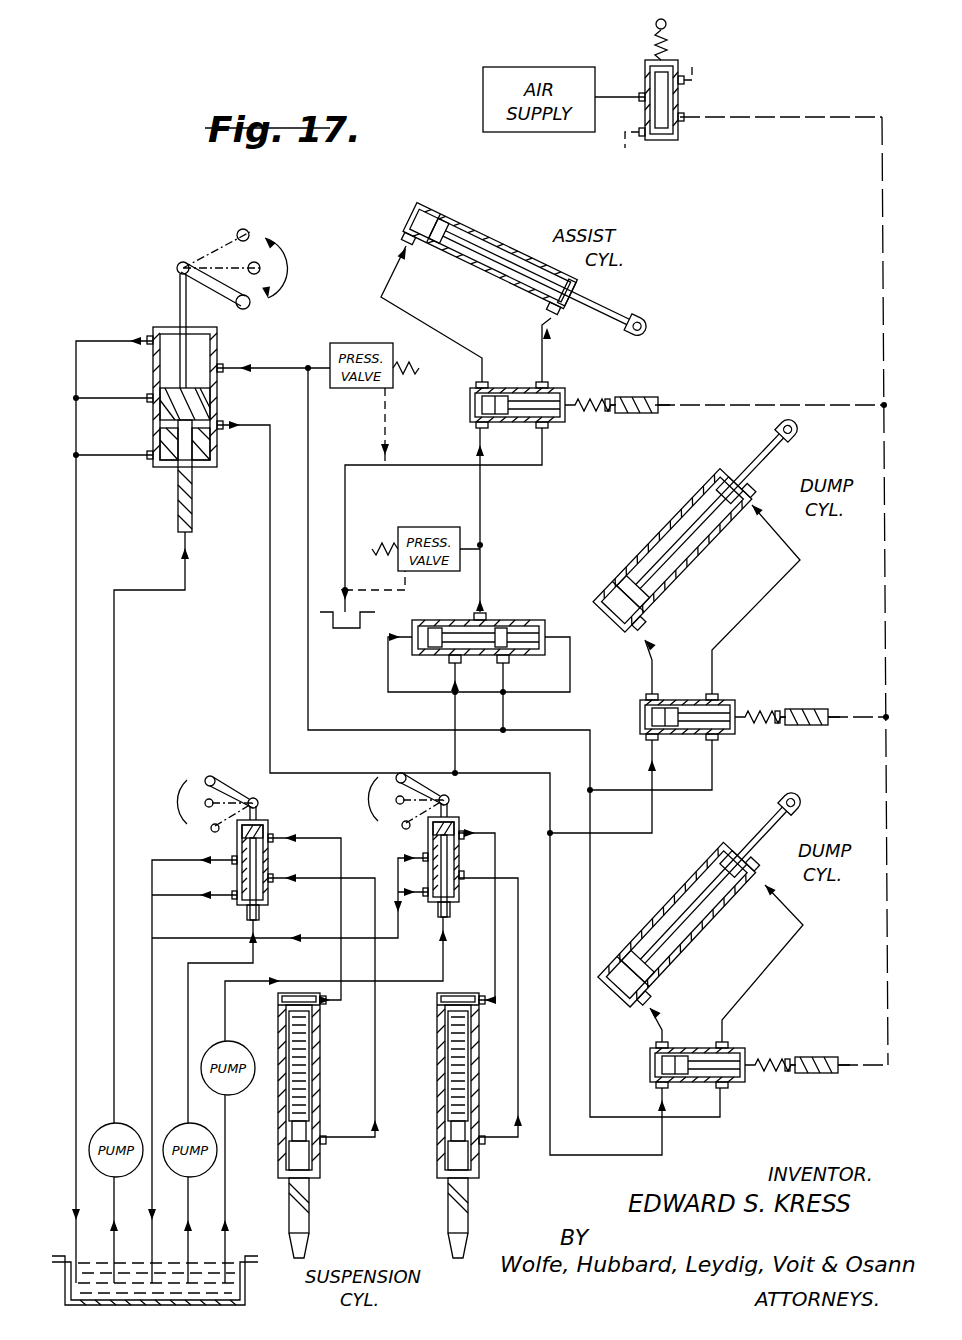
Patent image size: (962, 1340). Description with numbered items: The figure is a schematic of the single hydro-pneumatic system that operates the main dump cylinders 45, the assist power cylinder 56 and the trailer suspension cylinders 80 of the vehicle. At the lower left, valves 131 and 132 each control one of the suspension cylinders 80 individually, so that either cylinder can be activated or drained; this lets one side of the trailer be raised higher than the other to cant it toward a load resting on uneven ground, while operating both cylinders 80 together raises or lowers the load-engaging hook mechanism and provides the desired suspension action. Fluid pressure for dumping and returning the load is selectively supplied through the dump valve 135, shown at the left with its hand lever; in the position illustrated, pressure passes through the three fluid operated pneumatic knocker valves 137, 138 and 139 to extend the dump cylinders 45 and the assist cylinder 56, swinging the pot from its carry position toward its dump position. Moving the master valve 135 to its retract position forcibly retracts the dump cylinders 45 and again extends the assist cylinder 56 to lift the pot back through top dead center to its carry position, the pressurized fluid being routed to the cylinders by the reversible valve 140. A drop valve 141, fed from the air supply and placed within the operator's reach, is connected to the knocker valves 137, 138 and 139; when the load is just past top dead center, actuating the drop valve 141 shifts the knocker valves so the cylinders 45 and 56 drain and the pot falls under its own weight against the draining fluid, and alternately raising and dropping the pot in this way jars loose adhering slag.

The main dump cylinder 45 is at (680, 522).
The assist power cylinder 56 is at (493, 234).
The trailer suspension cylinder 80 is at (320, 1082).
The valve 131 is at (270, 828).
The valve 132 is at (460, 825).
The dump valve 135 is at (153, 328).
The fluid operated pneumatic knocker valve 137 is at (560, 390).
The fluid operated pneumatic knocker valve 138 is at (732, 698).
The fluid operated pneumatic knocker valve 139 is at (740, 1046).
The reversible valve 140 is at (500, 622).
The drop valve 141 is at (688, 55).